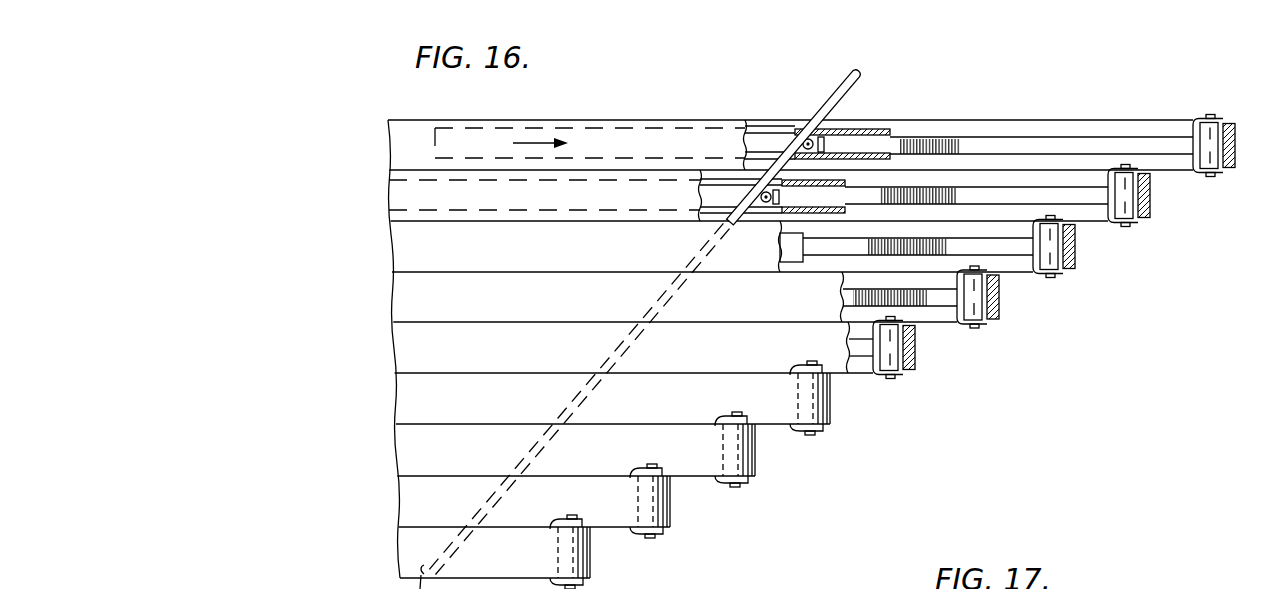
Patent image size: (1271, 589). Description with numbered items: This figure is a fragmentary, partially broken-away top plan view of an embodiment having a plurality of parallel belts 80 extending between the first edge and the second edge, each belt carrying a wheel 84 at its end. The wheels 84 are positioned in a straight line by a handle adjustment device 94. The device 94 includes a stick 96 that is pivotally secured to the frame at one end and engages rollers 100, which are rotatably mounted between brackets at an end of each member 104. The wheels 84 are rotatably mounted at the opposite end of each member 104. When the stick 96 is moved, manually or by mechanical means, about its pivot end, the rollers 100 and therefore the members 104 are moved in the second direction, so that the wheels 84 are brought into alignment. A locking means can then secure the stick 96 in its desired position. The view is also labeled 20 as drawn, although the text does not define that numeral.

The telescoping mast assembly 20 is at (1020, 367).
The belt 80 is at (1092, 127).
The wheel 84 is at (1222, 123).
The handle adjustment device 94 is at (790, 102).
The stick 96 is at (850, 82).
The roller 100 is at (824, 146).
The member 104 is at (973, 137).